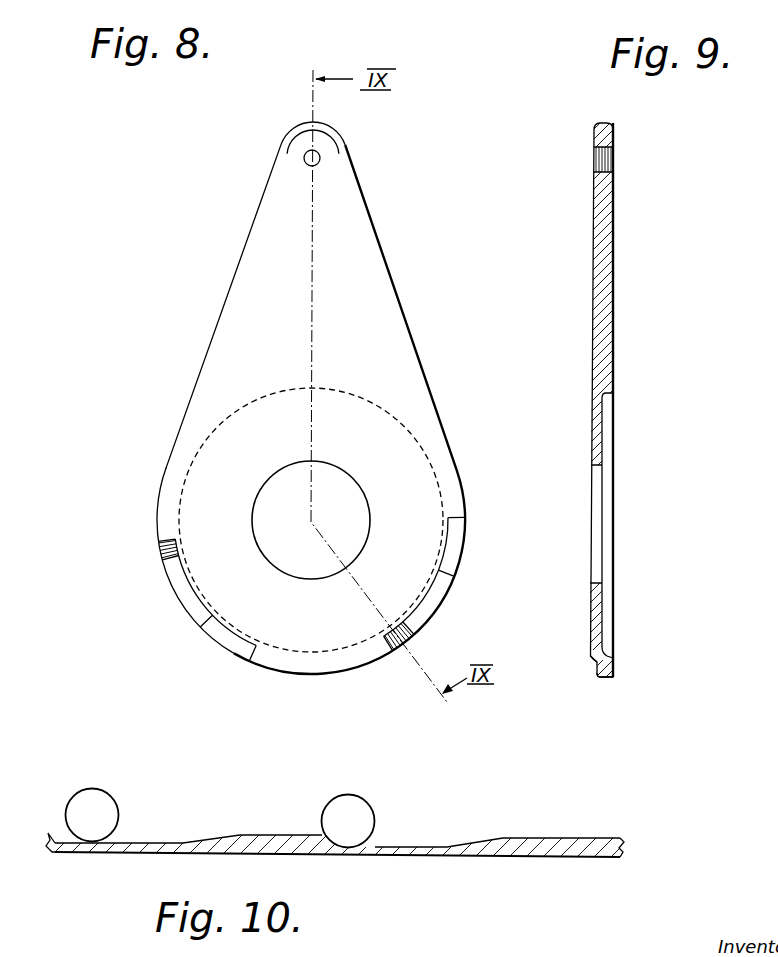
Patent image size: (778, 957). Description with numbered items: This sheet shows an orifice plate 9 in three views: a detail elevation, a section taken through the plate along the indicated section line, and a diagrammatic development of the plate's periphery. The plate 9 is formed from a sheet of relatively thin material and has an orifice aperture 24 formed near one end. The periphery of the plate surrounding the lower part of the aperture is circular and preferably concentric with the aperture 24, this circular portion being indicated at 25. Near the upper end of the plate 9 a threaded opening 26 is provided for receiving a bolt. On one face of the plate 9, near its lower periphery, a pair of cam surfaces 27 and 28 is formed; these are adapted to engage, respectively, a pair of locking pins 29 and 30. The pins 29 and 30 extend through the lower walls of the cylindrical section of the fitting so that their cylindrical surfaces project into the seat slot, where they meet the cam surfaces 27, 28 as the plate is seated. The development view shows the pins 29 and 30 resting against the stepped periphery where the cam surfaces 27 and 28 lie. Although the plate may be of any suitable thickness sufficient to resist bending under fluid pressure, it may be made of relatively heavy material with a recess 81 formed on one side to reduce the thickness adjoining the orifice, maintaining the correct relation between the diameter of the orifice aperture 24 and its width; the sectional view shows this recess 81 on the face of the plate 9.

In FIG. 8, the orifice plate 9 is at (241, 257).
In FIG. 9, the orifice plate 9 is at (607, 300).
In FIG. 10, the orifice plate 9 is at (556, 842).
In FIG. 8, the orifice aperture 24 is at (266, 481).
In FIG. 9, the orifice aperture 24 is at (597, 497).
In FIG. 8, the circular periphery 25 is at (449, 593).
In FIG. 8, the threaded opening 26 is at (322, 160).
In FIG. 9, the threaded opening 26 is at (612, 162).
In FIG. 8, the cam surface 27 is at (422, 619).
In FIG. 9, the cam surface 27 is at (599, 662).
In FIG. 10, the cam surface 27 is at (418, 845).
In FIG. 8, the cam surface 28 is at (183, 590).
In FIG. 10, the cam surface 28 is at (144, 842).
In FIG. 10, the locking pin 29 is at (362, 818).
In FIG. 10, the locking pin 30 is at (108, 816).
In FIG. 8, the recess 81 is at (354, 392).
In FIG. 9, the recess 81 is at (607, 410).